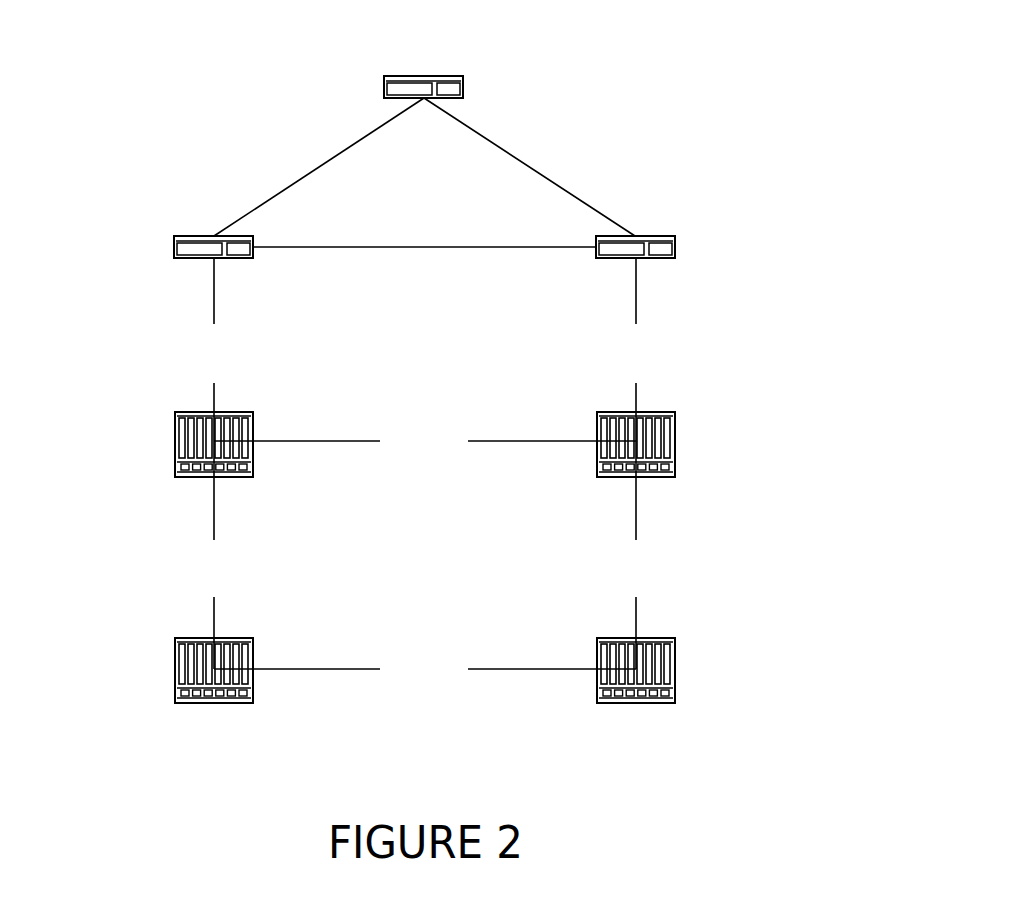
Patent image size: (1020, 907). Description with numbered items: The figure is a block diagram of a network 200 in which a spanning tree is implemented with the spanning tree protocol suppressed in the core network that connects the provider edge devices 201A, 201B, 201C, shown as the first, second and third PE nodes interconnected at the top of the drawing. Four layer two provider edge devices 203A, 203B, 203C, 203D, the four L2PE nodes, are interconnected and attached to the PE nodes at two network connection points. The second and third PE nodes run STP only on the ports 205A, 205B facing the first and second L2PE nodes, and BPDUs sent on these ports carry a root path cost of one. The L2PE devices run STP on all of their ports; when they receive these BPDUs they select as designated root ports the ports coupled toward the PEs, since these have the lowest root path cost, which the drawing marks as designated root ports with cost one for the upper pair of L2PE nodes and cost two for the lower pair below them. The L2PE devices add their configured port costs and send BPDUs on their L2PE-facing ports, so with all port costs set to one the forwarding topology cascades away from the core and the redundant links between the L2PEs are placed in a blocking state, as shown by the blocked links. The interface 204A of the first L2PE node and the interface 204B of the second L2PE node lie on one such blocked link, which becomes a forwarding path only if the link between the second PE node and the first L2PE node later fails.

The network 200 is at (842, 635).
The provider edge device 201A is at (423, 62).
The provider edge device 201B is at (221, 272).
The provider edge device 201C is at (643, 272).
The layer 2 provider edge device 203A is at (232, 470).
The layer 2 provider edge device 203B is at (654, 470).
The layer 2 provider edge device 203C is at (214, 697).
The layer 2 provider edge device 203D is at (636, 697).
The interface 204A is at (253, 441).
The interface 204B is at (596, 441).
The designated root port of PE-2 205A is at (212, 257).
The designated root port of PE-3 205B is at (632, 257).